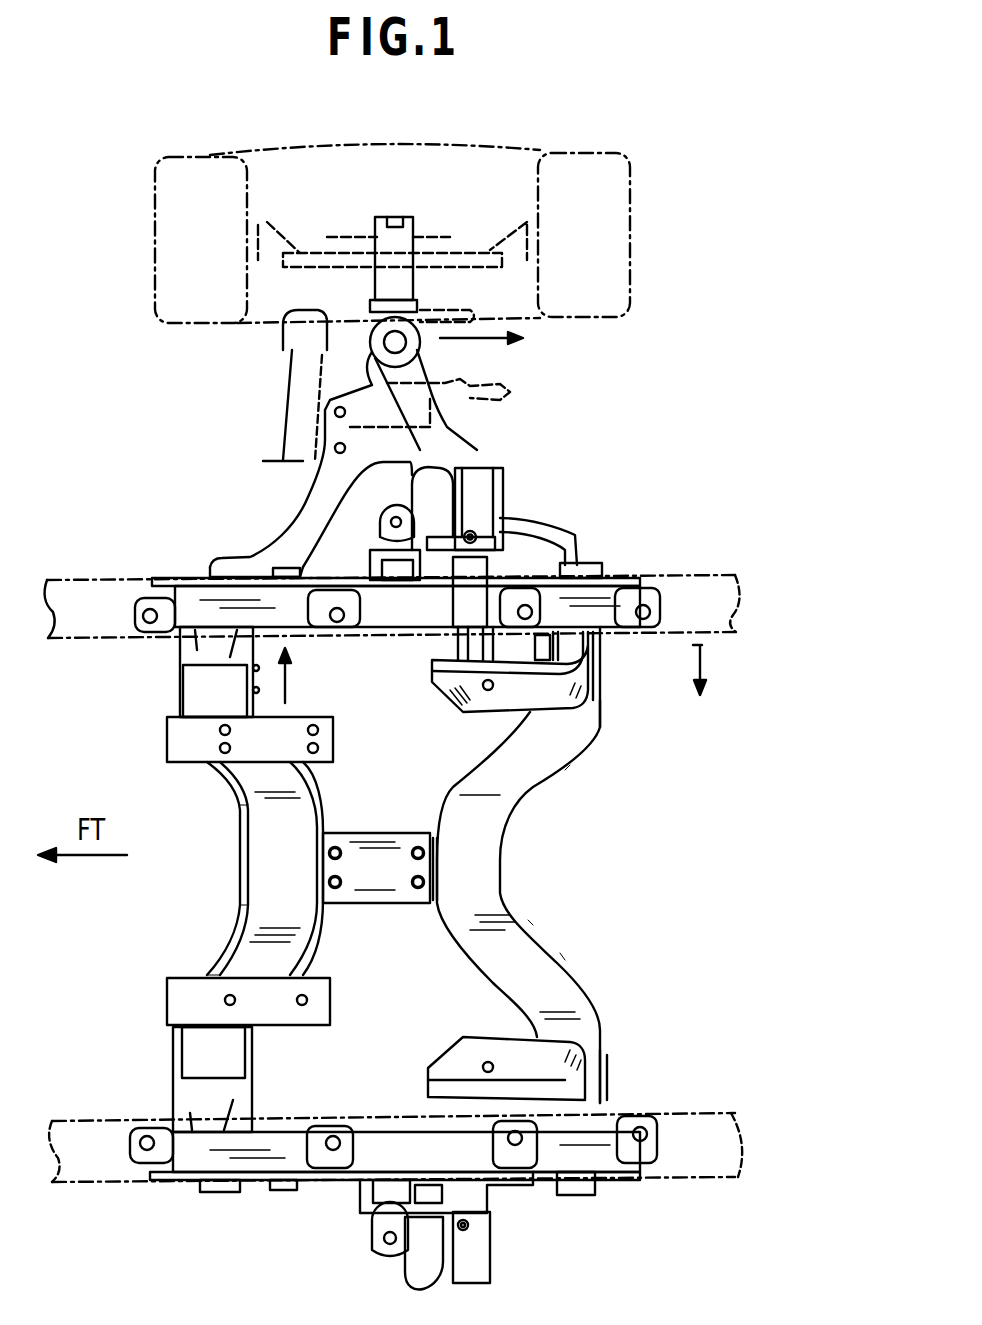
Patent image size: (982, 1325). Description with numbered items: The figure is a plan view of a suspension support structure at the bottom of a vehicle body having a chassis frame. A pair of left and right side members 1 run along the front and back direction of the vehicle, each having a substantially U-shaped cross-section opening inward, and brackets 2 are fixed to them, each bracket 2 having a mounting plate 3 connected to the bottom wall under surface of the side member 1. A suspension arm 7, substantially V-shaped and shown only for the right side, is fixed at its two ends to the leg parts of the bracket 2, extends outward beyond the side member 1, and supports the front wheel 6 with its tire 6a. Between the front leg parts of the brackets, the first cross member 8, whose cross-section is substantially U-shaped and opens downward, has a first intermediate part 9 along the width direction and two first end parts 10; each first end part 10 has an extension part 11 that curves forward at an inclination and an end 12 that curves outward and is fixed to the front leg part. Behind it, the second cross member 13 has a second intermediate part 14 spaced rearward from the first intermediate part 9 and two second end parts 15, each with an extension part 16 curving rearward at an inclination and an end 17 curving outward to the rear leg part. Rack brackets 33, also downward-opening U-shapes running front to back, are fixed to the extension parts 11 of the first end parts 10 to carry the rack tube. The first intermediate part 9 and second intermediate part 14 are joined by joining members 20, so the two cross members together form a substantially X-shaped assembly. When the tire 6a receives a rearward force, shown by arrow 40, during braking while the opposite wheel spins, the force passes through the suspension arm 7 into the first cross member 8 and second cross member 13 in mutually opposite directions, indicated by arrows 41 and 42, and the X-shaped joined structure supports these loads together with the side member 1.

The side member 1 is at (690, 572).
The bracket 2 is at (627, 572).
The mounting plate 3 is at (200, 598).
The front wheel 6 is at (155, 240).
The tire 6a is at (632, 180).
The suspension arm 7 is at (292, 525).
The first cross member 8 is at (238, 852).
The first intermediate part 9 is at (237, 878).
The first end part 10 is at (205, 770).
The extension part 11 is at (238, 802).
The end 12 is at (180, 705).
The second cross member 13 is at (503, 838).
The second intermediate part 14 is at (503, 873).
The second end part 15 is at (597, 735).
The extension part 16 is at (565, 770).
The end 17 is at (600, 697).
The joining member 20 is at (372, 832).
The rack bracket 33 is at (322, 716).
The arrow 40 is at (485, 345).
The arrow 41 is at (288, 692).
The arrow 42 is at (704, 665).